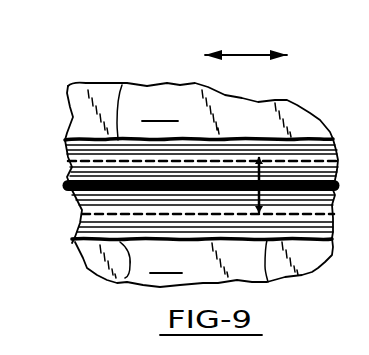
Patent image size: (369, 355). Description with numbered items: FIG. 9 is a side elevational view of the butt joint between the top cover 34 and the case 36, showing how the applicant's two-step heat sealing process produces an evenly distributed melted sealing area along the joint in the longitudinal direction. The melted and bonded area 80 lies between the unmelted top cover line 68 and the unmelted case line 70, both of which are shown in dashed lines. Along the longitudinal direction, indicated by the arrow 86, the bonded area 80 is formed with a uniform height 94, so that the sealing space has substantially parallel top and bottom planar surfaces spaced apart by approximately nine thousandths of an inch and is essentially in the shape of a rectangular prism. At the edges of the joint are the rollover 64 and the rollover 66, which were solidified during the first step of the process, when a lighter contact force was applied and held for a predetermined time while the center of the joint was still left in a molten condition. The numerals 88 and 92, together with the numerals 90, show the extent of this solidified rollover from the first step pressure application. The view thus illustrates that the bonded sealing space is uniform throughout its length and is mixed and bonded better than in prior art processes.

The first ply 34 is at (200, 110).
The second ply 36 is at (204, 262).
The rollover 64 is at (233, 147).
The rollover 66 is at (268, 282).
The unmelted top cover line 68 is at (124, 163).
The unmelted case line 70 is at (125, 278).
The melted sealing area 80 is at (205, 170).
The arrow 86 is at (243, 55).
The extent of solidified rollover 88 is at (65, 142).
The extent of solidified rollover 90 is at (63, 178).
The extent of solidified rollover 92 is at (77, 247).
The uniform height 94 is at (277, 180).